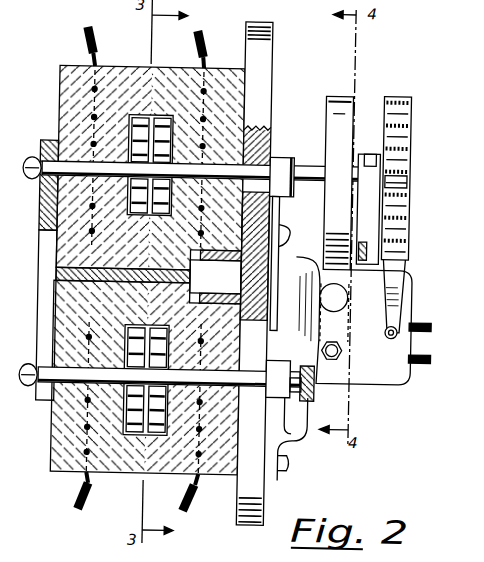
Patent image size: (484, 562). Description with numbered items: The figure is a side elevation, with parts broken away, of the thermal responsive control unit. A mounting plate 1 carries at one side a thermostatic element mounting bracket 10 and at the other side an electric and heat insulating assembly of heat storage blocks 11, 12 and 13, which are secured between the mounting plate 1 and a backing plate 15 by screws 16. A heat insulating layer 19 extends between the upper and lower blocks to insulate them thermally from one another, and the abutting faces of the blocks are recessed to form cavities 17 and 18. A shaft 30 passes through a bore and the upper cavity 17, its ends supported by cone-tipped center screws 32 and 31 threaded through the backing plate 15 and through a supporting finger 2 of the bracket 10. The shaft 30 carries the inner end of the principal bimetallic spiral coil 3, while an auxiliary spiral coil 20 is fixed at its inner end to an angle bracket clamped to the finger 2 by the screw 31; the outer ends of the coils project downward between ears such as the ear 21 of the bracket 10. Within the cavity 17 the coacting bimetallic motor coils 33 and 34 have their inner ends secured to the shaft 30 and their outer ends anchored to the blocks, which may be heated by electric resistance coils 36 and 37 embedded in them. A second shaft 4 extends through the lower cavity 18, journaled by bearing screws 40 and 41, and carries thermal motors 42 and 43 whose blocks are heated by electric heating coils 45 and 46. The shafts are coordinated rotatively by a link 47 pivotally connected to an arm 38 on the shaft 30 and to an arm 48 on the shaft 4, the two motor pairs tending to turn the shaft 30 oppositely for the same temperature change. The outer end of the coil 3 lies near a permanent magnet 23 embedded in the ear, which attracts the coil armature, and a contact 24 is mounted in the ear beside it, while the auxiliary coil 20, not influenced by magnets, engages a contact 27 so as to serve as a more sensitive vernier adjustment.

The mounting plate 1 is at (262, 509).
The supporting finger 2 is at (367, 152).
The principal bimetallic thermal sensitive spiral coil 3 is at (332, 99).
The shaft 4 is at (70, 373).
The thermostatic element mounting bracket 10 is at (291, 431).
The heat storage block 11 is at (219, 80).
The heat storage block 12 is at (217, 478).
The heat storage block 13 is at (64, 72).
The backing plate 15 is at (47, 407).
The screws 16 is at (216, 277).
The cavity 17 is at (163, 112).
The cavity 18 is at (159, 439).
The heat insulating layer 19 is at (60, 279).
The auxiliary bimetallic thermal sensitive spiral coil 20 is at (400, 98).
The ear 21 is at (388, 383).
The permanent magnet 23 is at (334, 312).
The contact 24 is at (343, 349).
The contact 27 is at (400, 328).
The shaft 30 is at (301, 171).
The cone-tipped center screw 31 is at (392, 179).
The cone-tipped center screw 32 is at (27, 162).
The bimetallic thermal responsive motor coil 33 is at (129, 117).
The bimetallic thermal responsive motor coil 34 is at (160, 116).
The electric resistance coil 36 is at (203, 60).
The electric resistance coil 37 is at (96, 66).
The arm 38 is at (276, 157).
The bearing screw 40 is at (313, 386).
The bearing screw 41 is at (29, 384).
The thermal motor 42 is at (132, 439).
The thermal motor 43 is at (188, 471).
The electric heating coil 45 is at (200, 487).
The electric heating coil 46 is at (84, 488).
The link 47 is at (283, 247).
The arm 48 is at (296, 393).